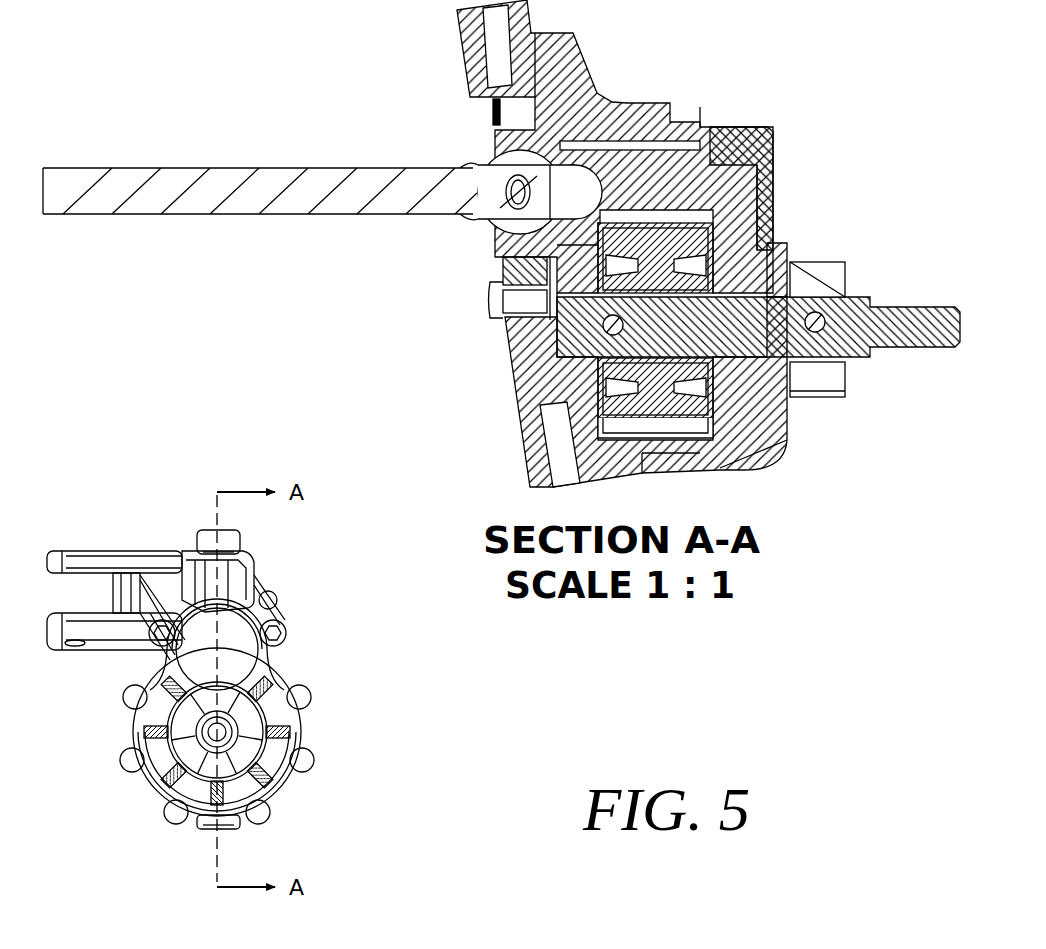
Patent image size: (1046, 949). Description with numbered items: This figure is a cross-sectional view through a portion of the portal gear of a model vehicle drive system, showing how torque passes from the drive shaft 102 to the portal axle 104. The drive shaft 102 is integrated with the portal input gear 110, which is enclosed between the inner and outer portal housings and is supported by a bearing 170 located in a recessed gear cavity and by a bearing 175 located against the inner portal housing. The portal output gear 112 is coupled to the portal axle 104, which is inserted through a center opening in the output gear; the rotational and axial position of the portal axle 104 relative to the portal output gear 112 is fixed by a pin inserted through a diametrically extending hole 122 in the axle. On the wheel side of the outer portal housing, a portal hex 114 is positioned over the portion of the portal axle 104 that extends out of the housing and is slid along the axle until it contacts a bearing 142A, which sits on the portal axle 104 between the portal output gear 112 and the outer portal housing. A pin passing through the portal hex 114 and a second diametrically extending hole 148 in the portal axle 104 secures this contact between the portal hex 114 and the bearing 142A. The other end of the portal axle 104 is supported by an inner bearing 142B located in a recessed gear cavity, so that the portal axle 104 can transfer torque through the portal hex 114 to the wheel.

The drive shaft 102 is at (160, 196).
The portal axle 104 is at (937, 333).
The portal input gear 110 is at (640, 175).
The portal output gear 112 is at (740, 465).
The portal hex 114 is at (842, 262).
The diametrically extending hole 122 is at (603, 323).
The bearing 142A is at (758, 238).
The inner bearing 142B is at (520, 378).
The second diametrically extending hole 148 is at (815, 322).
The bearing 170 is at (817, 95).
The bearing 175 is at (490, 114).